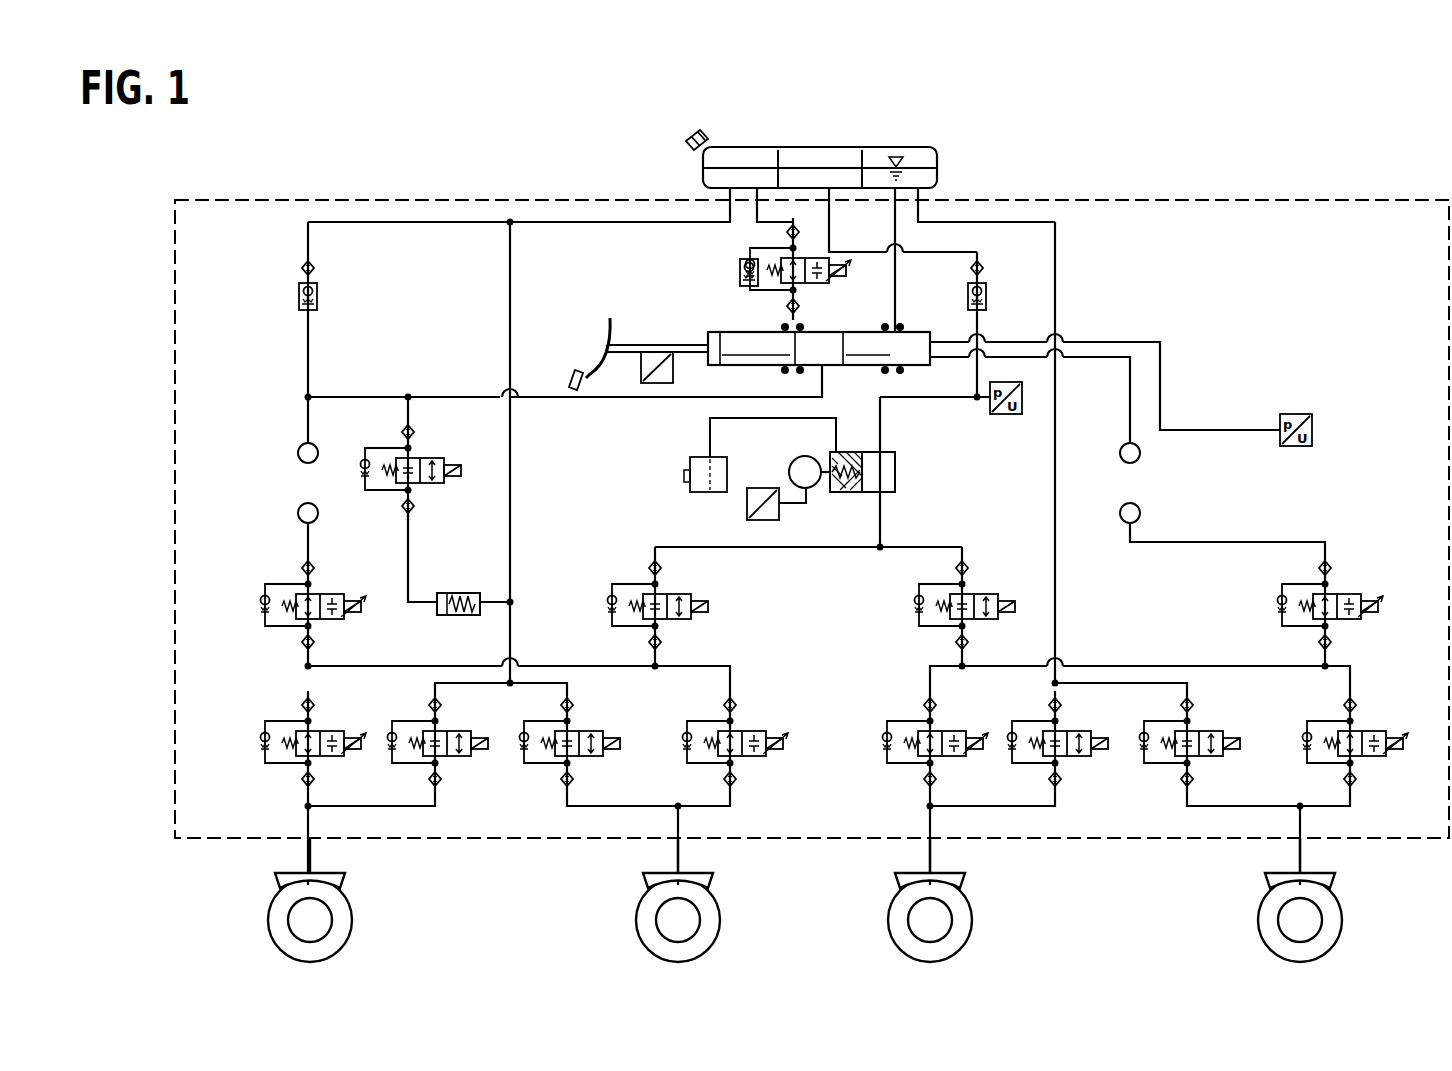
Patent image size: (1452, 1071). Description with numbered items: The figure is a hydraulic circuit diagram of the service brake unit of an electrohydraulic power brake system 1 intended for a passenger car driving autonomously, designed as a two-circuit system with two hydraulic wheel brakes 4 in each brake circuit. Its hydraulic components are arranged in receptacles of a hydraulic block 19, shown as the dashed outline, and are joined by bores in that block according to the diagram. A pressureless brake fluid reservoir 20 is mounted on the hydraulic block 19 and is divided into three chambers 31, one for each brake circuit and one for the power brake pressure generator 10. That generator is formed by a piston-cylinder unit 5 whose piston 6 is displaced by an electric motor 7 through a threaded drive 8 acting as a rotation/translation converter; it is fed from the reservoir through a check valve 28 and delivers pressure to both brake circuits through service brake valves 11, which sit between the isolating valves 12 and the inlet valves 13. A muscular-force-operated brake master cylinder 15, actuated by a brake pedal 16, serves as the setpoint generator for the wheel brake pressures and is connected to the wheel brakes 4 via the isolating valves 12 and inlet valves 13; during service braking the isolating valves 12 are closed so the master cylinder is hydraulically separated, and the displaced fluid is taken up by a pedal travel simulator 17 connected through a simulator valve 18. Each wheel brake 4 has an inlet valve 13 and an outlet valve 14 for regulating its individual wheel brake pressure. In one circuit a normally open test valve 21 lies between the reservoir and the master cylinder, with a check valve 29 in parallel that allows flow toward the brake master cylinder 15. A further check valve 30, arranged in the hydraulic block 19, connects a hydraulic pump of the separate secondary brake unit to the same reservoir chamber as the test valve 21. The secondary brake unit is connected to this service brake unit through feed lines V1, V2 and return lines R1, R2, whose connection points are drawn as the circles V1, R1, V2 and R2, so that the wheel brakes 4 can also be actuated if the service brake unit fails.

The electrohydraulic power brake system 1 is at (1324, 162).
The hydraulic wheel brake 4 is at (340, 884).
The piston-cylinder unit 5 is at (895, 462).
The piston 6 is at (850, 455).
The electric motor 7 is at (790, 465).
The threaded drive 8 is at (842, 492).
The power brake pressure generator 10 is at (912, 487).
The service brake valve 11 is at (690, 598).
The isolating valve 12 is at (338, 595).
The inlet valve 13 is at (326, 733).
The outlet valve 14 is at (592, 733).
The brake master cylinder 15 is at (905, 332).
The brake pedal 16 is at (578, 376).
The pedal travel simulator 17 is at (460, 593).
The simulator valve 18 is at (440, 464).
The hydraulic block 19 is at (410, 196).
The brake fluid reservoir 20 is at (937, 150).
The test valve 21 is at (828, 288).
The check valve 28 is at (987, 297).
The check valve 29 is at (740, 272).
The check valve 30 is at (298, 294).
The chamber 31 is at (887, 158).
The feed line V1 is at (298, 453).
The return line R1 is at (298, 513).
The feed line V2 is at (1140, 455).
The return line R2 is at (1140, 515).